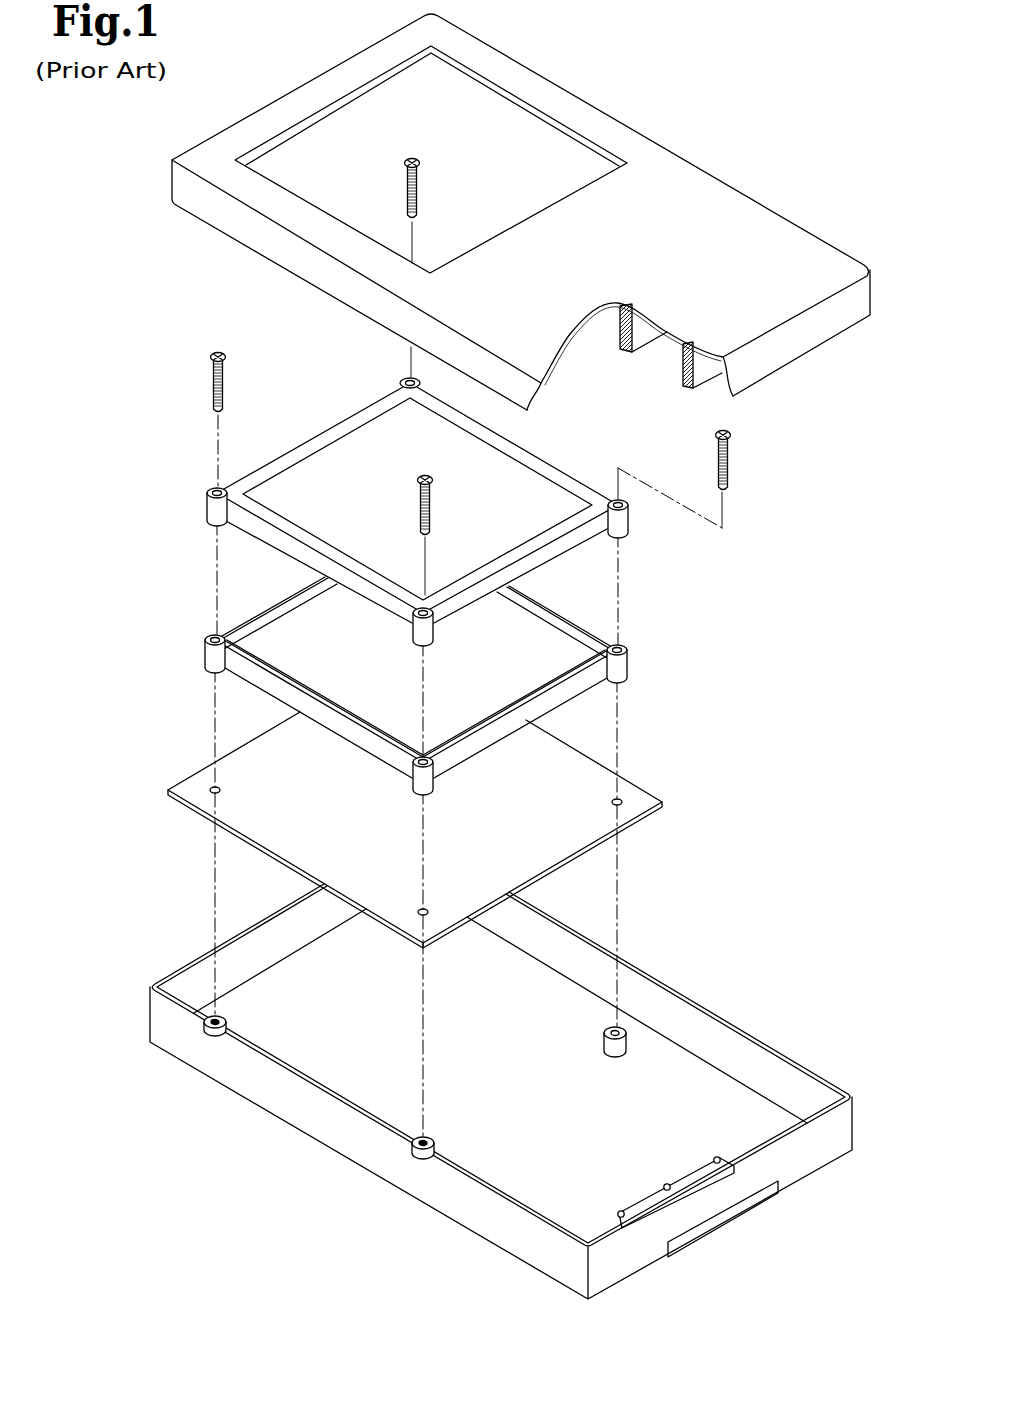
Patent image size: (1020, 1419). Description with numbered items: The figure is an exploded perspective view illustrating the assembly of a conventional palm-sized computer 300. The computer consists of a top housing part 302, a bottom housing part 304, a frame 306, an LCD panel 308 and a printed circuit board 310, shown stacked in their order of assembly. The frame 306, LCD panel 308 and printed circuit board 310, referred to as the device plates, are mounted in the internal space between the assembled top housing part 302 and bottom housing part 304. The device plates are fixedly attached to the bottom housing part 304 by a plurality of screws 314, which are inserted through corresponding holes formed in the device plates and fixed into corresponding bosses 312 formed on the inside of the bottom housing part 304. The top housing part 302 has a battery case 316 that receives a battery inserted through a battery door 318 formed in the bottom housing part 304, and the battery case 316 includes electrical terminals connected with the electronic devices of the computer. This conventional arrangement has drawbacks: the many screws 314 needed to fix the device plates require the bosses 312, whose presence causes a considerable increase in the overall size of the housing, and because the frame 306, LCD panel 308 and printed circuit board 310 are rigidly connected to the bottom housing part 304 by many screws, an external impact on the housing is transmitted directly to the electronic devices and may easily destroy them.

The palm-sized computer 300 is at (80, 146).
The top housing part 302 is at (198, 210).
The bottom housing part 304 is at (501, 1091).
The frame 306 is at (210, 655).
The LCD panel 308 is at (208, 507).
The printed circuit board 310 is at (183, 793).
The boss 312 is at (434, 1139).
The screw 314 is at (222, 358).
The battery case 316 is at (648, 337).
The battery door 318 is at (718, 1220).